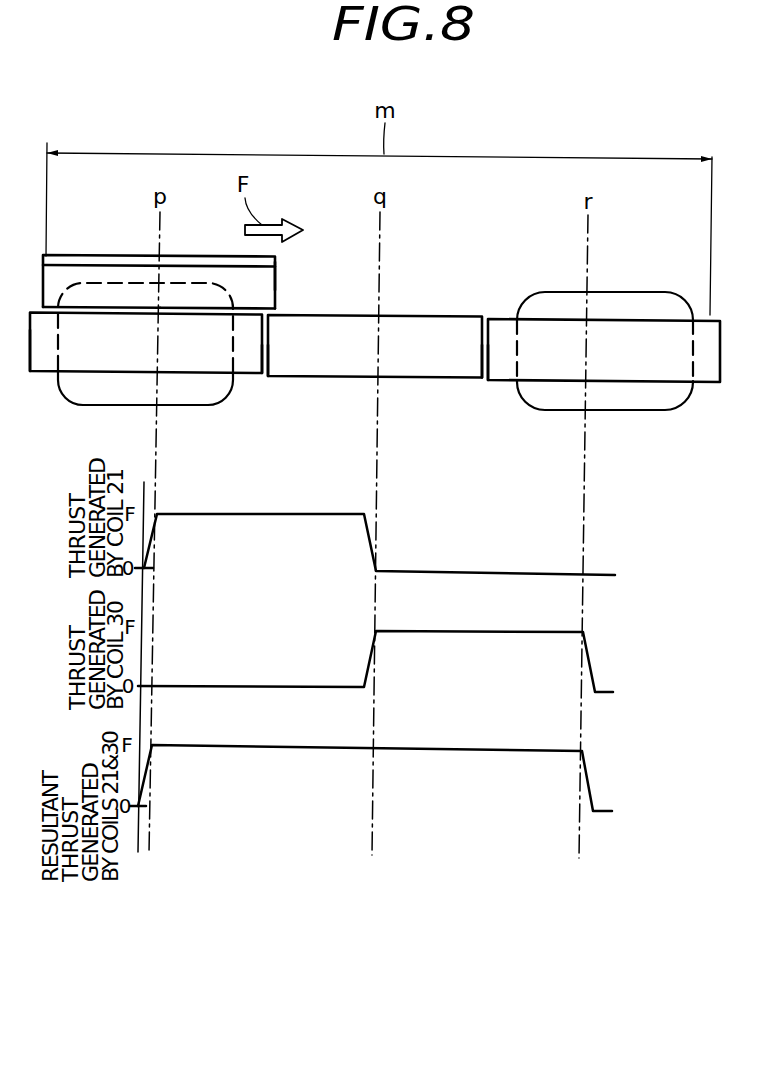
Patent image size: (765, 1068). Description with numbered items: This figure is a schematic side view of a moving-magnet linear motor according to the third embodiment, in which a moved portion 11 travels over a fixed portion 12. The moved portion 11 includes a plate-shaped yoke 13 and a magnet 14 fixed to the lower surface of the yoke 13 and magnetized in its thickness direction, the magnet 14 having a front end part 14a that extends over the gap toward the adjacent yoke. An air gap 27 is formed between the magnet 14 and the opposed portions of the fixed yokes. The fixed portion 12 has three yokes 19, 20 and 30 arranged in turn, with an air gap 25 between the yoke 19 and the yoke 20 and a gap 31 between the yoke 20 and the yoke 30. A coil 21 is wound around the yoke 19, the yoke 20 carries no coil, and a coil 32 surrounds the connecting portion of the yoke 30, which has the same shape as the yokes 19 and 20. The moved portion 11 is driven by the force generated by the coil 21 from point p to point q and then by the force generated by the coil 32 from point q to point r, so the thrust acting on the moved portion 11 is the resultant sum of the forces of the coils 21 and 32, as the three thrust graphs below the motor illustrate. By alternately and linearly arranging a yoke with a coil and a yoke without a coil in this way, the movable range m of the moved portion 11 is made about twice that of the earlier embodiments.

The moved portion 11 is at (193, 246).
The fixed portion 12 is at (241, 388).
The yoke 13 is at (125, 257).
The magnet 14 is at (82, 273).
The front end part 14a is at (268, 278).
The yoke 19 is at (53, 364).
The yoke 20 is at (400, 378).
The coil 21 is at (135, 405).
The air gap 25 is at (267, 368).
The air gap 27 is at (255, 309).
The yoke 30 is at (708, 375).
The gap 31 is at (487, 367).
The coil 32 is at (647, 412).